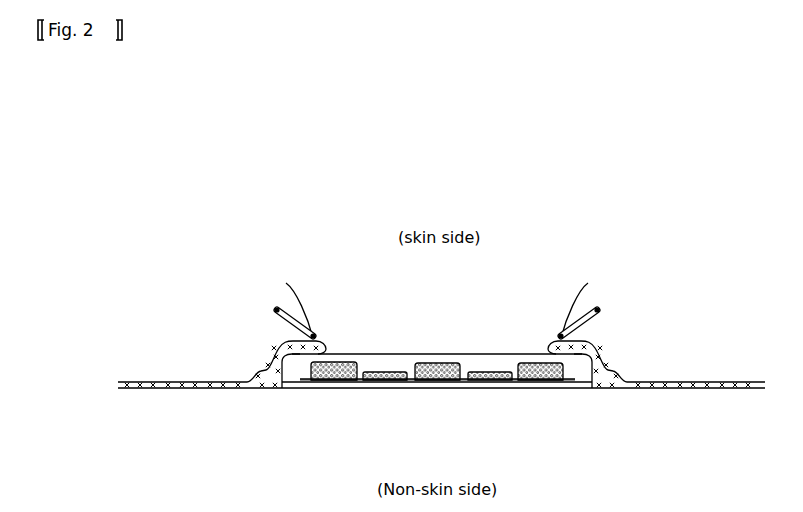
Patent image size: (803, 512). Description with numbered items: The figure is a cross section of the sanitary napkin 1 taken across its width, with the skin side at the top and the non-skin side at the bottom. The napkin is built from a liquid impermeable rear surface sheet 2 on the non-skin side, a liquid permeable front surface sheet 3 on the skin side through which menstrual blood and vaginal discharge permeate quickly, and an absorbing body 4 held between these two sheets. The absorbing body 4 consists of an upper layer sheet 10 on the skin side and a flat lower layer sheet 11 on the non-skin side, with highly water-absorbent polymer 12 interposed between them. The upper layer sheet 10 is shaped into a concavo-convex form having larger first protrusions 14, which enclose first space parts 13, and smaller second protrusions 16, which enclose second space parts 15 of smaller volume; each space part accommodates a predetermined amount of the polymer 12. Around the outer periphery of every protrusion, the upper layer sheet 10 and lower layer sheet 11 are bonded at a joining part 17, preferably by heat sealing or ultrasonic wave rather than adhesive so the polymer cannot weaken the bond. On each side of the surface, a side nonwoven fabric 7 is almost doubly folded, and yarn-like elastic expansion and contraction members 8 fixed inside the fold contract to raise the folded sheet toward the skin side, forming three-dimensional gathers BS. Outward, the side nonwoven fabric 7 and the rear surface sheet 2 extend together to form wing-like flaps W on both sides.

The sanitary napkin 1 is at (620, 257).
The liquid impermeable rear surface sheet 2 is at (420, 385).
The liquid permeable front surface sheet 3 is at (450, 353).
The absorbing body 4 is at (474, 392).
The side nonwoven fabric 7 is at (273, 352).
The yarn-like elastic expansion and contraction member 8 is at (436, 300).
The upper layer sheet 10 is at (396, 371).
The lower layer sheet 11 is at (373, 381).
The highly water-absorbent polymer 12 is at (443, 381).
The first space part 13 is at (338, 362).
The first protrusion 14 is at (352, 363).
The second space part 15 is at (500, 372).
The second protrusion 16 is at (481, 372).
The joining part 17 is at (357, 383).
The three-dimensional gather BS is at (314, 304).
The wing-like flap W is at (163, 376).